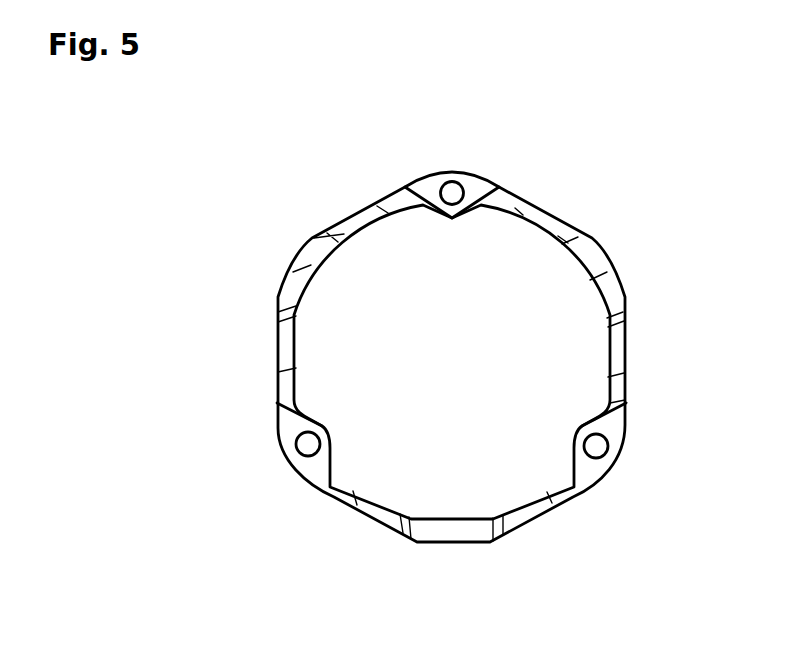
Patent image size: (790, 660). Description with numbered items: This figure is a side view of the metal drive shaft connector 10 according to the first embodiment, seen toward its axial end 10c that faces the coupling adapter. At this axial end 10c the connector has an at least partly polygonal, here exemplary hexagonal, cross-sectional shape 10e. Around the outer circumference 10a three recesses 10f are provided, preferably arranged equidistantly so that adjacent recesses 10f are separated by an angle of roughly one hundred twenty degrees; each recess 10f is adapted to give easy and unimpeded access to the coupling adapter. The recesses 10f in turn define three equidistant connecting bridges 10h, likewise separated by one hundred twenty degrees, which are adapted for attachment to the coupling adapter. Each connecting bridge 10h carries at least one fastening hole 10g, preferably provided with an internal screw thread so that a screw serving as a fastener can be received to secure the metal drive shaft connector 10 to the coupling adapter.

The metal drive shaft connector 10 is at (583, 184).
The outer circumference 10a is at (277, 353).
The axial end 10c is at (426, 186).
The hexagonal cross-sectional shape 10e is at (544, 512).
The recess 10f is at (293, 292).
The fastening hole 10g is at (453, 193).
The connecting bridge 10h is at (442, 182).